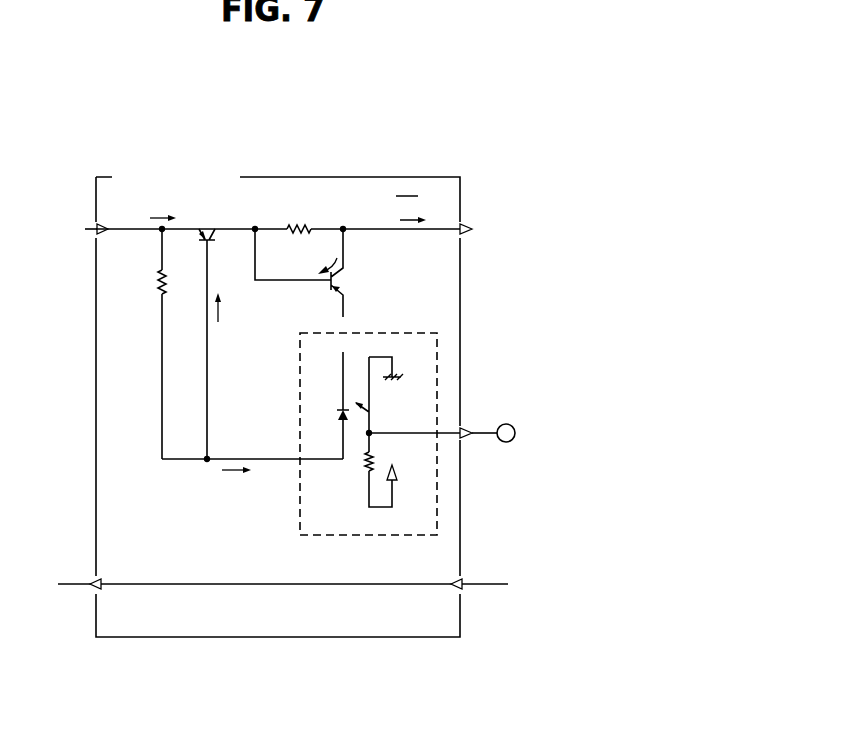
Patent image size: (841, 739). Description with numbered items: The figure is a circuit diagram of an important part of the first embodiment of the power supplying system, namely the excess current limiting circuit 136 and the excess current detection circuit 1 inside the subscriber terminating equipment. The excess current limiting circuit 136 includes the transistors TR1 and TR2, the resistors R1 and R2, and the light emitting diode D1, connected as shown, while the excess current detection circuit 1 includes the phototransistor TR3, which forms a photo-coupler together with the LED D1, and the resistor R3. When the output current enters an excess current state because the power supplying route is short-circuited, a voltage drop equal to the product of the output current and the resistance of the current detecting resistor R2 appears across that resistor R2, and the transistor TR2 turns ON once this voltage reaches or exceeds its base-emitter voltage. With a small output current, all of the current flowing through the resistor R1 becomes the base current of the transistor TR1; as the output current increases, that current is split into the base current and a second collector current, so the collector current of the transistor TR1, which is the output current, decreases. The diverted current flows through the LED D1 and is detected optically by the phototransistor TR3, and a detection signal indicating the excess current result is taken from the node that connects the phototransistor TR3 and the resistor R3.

The excess current limiting circuit 136 is at (131, 402).
The excess current detection circuit 1 is at (437, 513).
The resistor R1 is at (144, 344).
The current detecting resistor R2 is at (301, 215).
The resistor R3 is at (363, 479).
The transistor TR1 is at (213, 327).
The transistor TR2 is at (365, 273).
The phototransistor TR3 is at (390, 404).
The light emitting diode D1 is at (330, 405).